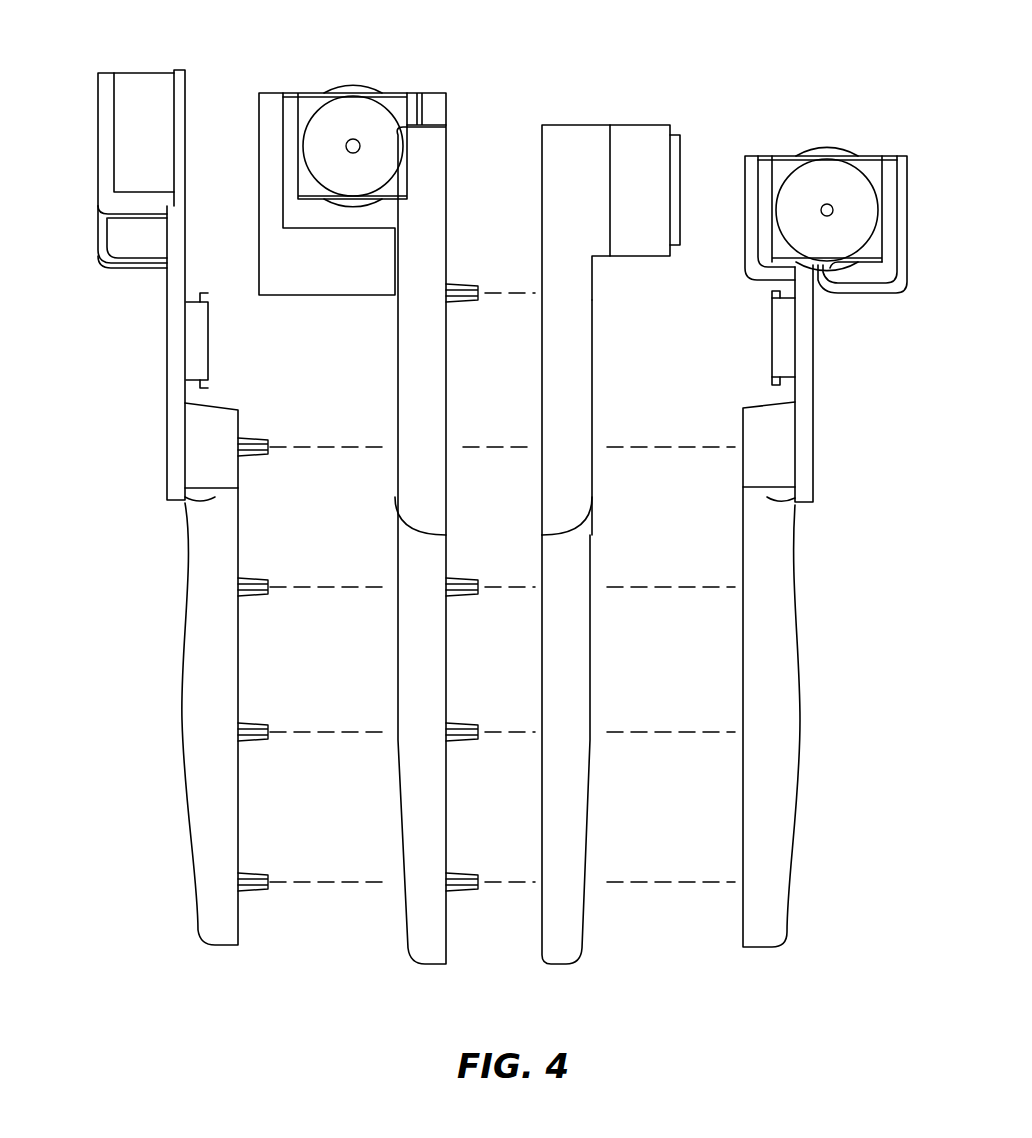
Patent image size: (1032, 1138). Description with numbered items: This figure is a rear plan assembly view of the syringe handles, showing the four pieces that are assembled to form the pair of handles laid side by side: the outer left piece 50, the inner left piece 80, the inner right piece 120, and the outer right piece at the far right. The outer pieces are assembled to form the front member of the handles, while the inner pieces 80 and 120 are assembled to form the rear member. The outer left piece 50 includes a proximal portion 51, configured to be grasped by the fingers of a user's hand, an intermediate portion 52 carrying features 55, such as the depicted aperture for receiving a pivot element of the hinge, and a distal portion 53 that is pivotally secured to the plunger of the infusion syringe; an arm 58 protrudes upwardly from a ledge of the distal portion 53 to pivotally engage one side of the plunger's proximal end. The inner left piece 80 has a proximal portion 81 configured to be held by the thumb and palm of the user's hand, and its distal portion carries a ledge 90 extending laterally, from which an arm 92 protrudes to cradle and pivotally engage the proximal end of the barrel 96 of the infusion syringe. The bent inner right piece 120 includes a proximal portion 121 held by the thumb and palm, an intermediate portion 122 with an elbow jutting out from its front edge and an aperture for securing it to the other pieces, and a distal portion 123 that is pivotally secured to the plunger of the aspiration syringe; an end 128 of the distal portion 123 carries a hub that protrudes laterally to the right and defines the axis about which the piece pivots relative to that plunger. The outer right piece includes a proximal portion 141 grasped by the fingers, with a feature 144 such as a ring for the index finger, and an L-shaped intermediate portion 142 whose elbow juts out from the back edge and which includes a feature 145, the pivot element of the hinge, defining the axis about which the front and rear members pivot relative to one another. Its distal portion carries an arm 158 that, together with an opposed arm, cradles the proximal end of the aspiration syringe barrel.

The outer left piece 50 is at (147, 60).
The proximal portion 51 is at (200, 700).
The intermediate portion 52 is at (163, 436).
The distal portion 53 is at (95, 192).
The features 55 is at (198, 335).
The arm 58 is at (112, 72).
The inner left piece 80 is at (437, 100).
The proximal portion 81 is at (422, 820).
The ledge 90 is at (318, 272).
The arm 92 is at (276, 93).
The barrel 96 is at (355, 87).
The inner right piece 120 is at (603, 90).
The proximal portion 121 is at (565, 805).
The intermediate portion 122 is at (597, 372).
The distal portion 123 is at (595, 278).
The end 128 is at (645, 125).
The proximal portion 141 is at (785, 725).
The intermediate portion 142 is at (815, 430).
The feature 144 is at (755, 465).
The feature 145 is at (780, 333).
The arm 158 is at (893, 156).